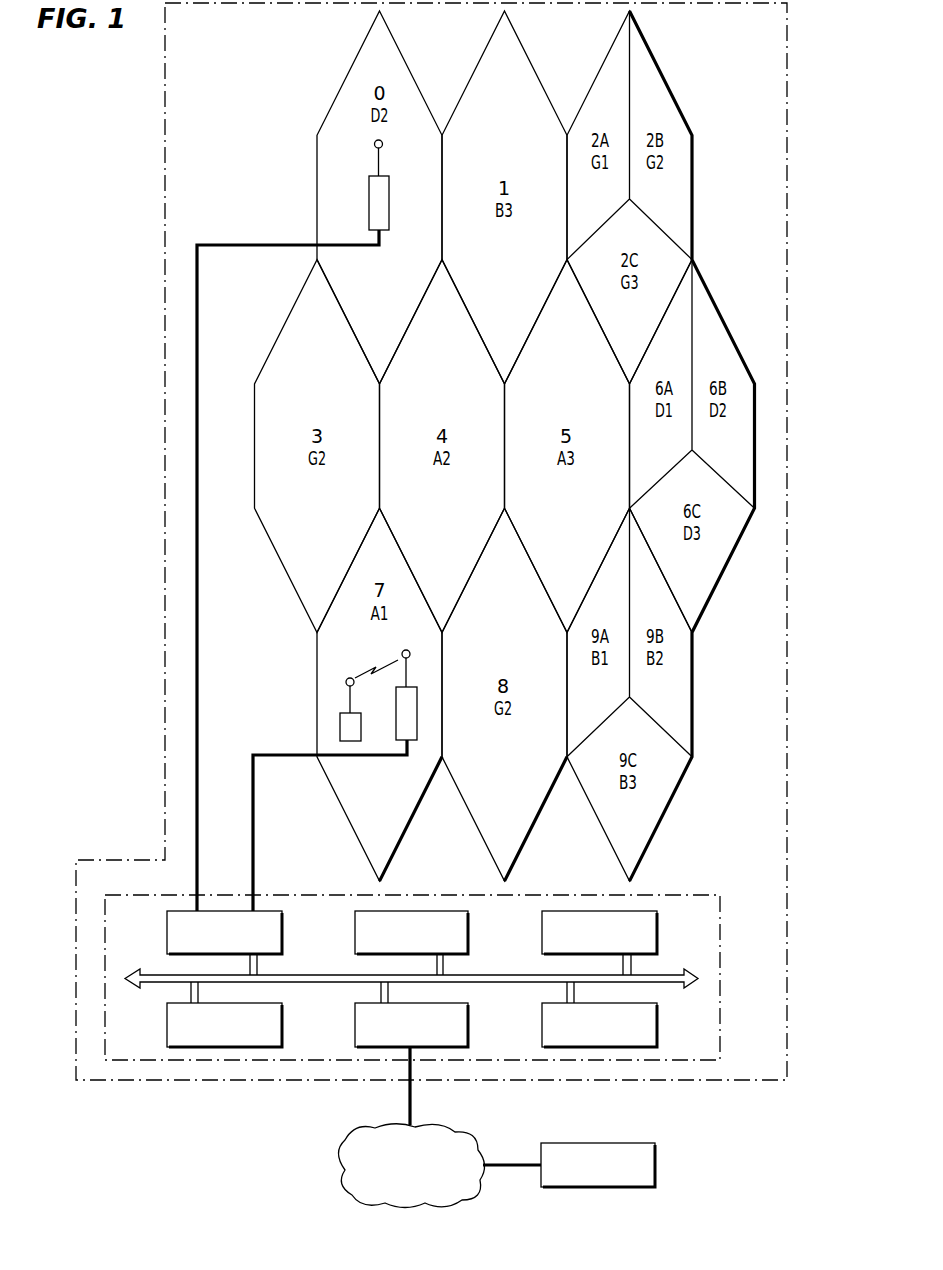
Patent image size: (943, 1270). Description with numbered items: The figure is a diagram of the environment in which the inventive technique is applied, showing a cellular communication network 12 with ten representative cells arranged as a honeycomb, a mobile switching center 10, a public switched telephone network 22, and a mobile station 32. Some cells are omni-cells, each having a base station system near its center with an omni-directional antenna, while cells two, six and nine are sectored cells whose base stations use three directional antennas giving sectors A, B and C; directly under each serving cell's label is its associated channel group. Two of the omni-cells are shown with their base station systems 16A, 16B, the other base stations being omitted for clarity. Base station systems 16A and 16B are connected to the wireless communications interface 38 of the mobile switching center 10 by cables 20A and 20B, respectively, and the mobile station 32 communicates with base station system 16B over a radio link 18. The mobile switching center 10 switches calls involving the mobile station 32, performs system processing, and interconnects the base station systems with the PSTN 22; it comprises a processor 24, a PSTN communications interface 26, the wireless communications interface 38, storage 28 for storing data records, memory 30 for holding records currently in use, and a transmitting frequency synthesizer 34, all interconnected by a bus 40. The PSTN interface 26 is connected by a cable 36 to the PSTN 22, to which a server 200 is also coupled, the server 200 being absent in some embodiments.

The mobile switching center 10 is at (720, 950).
The cellular communication network 12 is at (787, 54).
The base station system 16A is at (390, 203).
The base station system 16B is at (407, 744).
The radio link 18 is at (367, 666).
The cable 20A is at (197, 725).
The cable 20B is at (253, 865).
The public switched telephone network 22 is at (480, 1140).
The processor 24 is at (282, 1025).
The PSTN communications interface 26 is at (468, 1025).
The storage 28 is at (657, 932).
The memory 30 is at (657, 1025).
The mobile station 32 is at (361, 725).
The transmitting frequency synthesizer 34 is at (468, 932).
The cable 36 is at (407, 1091).
The wireless communications interface 38 is at (282, 934).
The bus 40 is at (348, 975).
The server 200 is at (655, 1155).